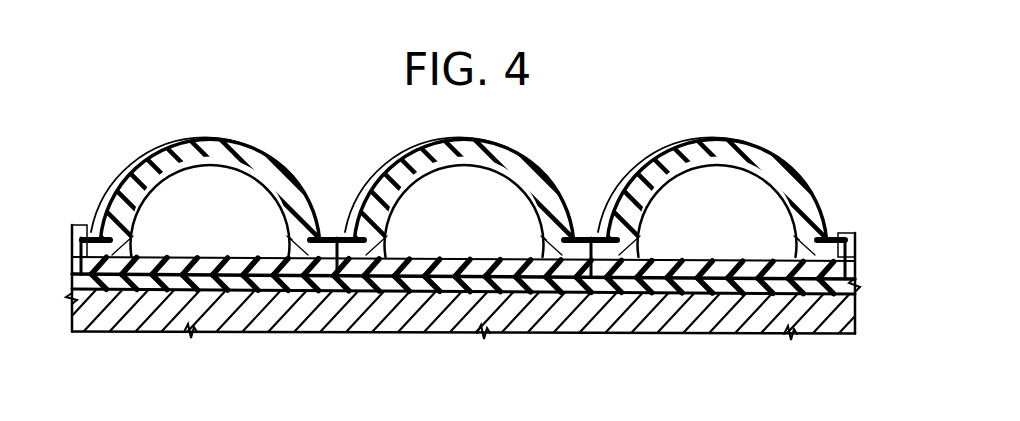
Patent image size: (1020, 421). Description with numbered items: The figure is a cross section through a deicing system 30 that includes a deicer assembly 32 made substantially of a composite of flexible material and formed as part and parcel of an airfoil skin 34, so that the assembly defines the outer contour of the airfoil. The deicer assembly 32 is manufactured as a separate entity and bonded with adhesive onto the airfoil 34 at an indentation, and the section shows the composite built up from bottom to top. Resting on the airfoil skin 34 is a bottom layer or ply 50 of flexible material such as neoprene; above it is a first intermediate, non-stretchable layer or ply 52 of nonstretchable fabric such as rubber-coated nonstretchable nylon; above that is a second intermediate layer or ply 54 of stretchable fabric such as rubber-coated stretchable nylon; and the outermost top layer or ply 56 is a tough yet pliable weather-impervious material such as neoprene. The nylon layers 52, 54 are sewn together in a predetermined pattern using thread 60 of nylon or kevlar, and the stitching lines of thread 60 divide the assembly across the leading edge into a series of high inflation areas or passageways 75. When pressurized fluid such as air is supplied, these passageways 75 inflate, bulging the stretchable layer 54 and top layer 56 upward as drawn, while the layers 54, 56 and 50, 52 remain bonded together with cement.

The deicing system 30 is at (294, 108).
The deicer assembly 32 is at (146, 129).
The airfoil skin 34 is at (344, 318).
The bottom layer 50 is at (727, 285).
The first intermediate non-stretchable layer 52 is at (666, 268).
The second intermediate stretchable layer 54 is at (698, 158).
The top layer 56 is at (807, 197).
The thread 60 is at (75, 265).
The high inflation areas 75 is at (207, 185).